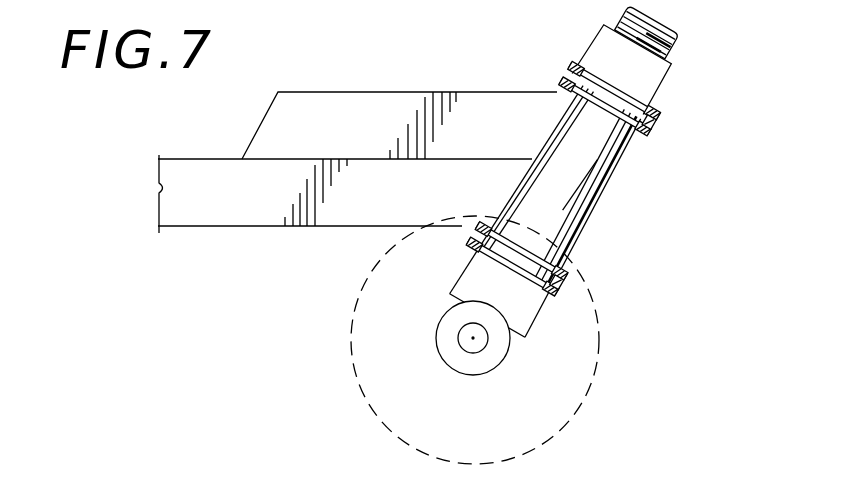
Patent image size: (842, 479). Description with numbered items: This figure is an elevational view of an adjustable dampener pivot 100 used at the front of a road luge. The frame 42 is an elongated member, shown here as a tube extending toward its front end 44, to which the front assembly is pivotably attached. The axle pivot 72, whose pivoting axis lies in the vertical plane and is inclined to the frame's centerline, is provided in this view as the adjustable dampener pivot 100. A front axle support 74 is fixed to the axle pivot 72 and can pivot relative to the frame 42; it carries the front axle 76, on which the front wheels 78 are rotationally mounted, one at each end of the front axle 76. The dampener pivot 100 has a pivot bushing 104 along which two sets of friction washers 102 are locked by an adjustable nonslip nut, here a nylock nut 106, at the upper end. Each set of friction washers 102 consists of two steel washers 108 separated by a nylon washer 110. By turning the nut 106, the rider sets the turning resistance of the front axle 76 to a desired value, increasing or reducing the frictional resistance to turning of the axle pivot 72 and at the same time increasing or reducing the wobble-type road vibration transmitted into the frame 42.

The frame 42 is at (226, 217).
The front end 44 is at (488, 170).
The axle pivot 72 is at (612, 188).
The front axle support 74 is at (437, 338).
The front axle 76 is at (474, 340).
The front wheels 78 is at (598, 371).
The adjustable dampener pivot 100 is at (634, 167).
The set of friction washers 102 is at (563, 57).
The pivot bushing 104 is at (573, 218).
The nylock nut 106 is at (669, 66).
The steel washers 108 is at (660, 117).
The nylon washer 110 is at (651, 129).